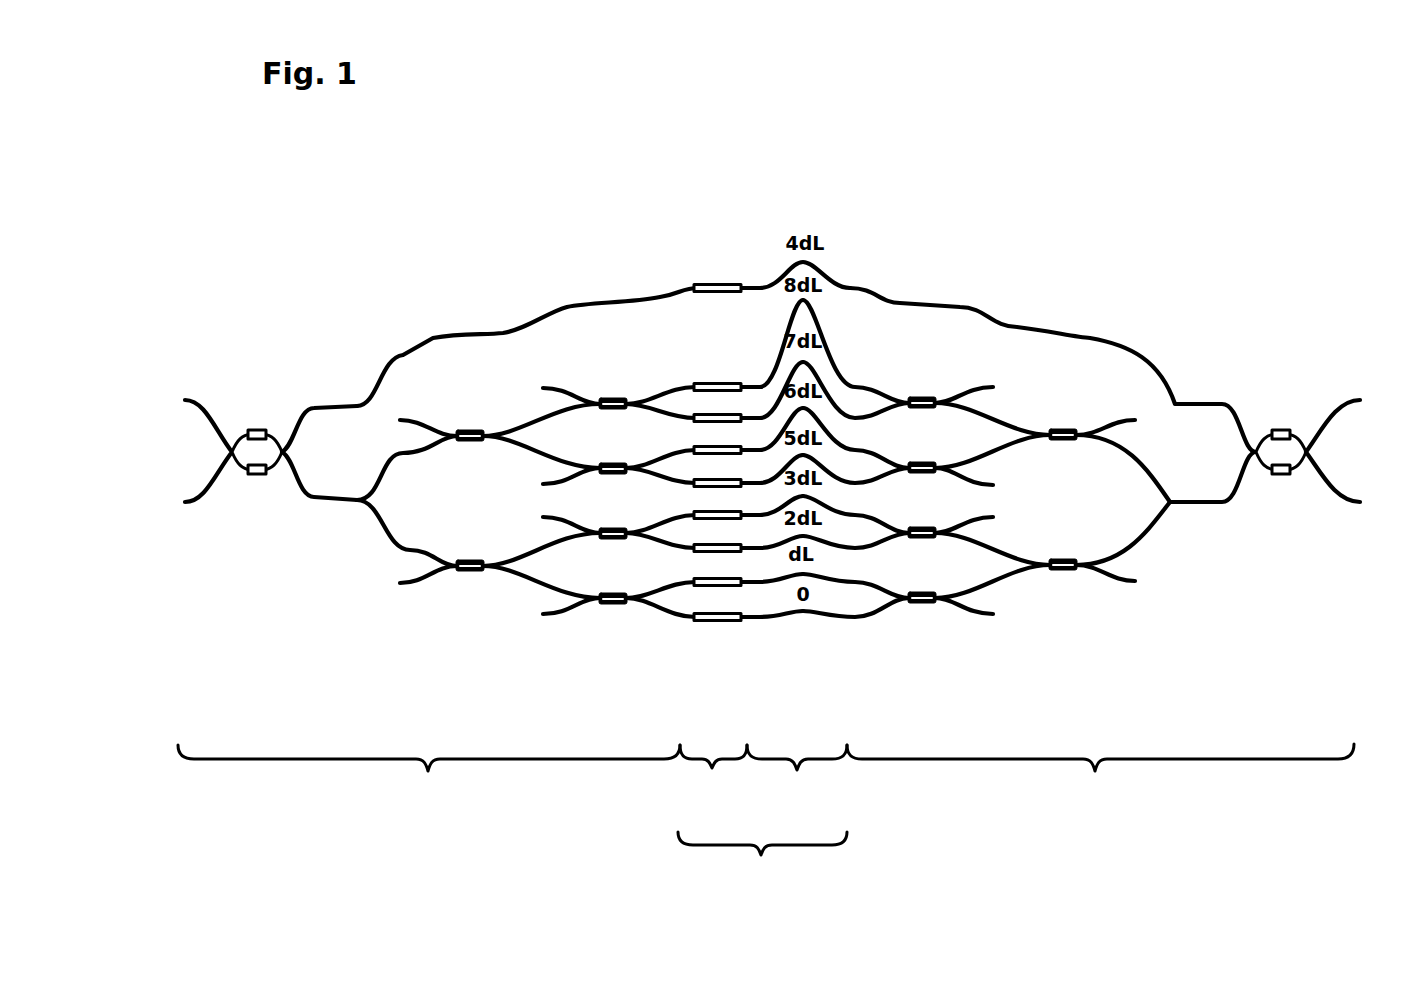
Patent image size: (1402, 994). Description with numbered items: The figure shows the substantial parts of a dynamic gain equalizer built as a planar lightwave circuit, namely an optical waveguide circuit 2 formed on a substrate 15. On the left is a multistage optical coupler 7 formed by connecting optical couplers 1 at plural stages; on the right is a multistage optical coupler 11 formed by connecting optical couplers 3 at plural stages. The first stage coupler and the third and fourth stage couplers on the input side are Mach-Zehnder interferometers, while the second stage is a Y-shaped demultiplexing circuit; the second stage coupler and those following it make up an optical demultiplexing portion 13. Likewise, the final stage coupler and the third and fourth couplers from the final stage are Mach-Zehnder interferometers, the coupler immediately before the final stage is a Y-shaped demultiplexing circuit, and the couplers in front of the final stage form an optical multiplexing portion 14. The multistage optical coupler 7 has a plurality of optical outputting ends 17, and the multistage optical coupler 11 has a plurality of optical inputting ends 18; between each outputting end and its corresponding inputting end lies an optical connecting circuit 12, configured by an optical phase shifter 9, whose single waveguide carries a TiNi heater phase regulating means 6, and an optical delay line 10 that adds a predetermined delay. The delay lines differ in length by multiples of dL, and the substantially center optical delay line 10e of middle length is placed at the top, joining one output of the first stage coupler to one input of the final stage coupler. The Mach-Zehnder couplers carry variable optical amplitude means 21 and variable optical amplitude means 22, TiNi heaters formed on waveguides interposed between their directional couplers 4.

The optical coupler 1 is at (258, 418).
The optical waveguide circuit 2 is at (1050, 197).
The optical coupler 3 is at (1282, 422).
The directional coupler 4 is at (449, 448).
The heater phase regulating means 6 is at (723, 286).
The multistage optical coupler 7 is at (429, 777).
The optical phase shifter 9 is at (713, 777).
The optical delay line 10 is at (797, 778).
The substantially center optical delay line 10e is at (833, 267).
The multistage optical coupler 11 is at (1100, 777).
The optical connecting circuit 12 is at (762, 861).
The optical demultiplexing portion 13 is at (553, 635).
The optical multiplexing portion 14 is at (1021, 632).
The substrate 15 is at (1176, 230).
The optical outputting end 17 is at (688, 286).
The optical inputting end 18 is at (857, 288).
The variable optical amplitude means 21 is at (470, 428).
The variable optical amplitude means 22 is at (924, 388).